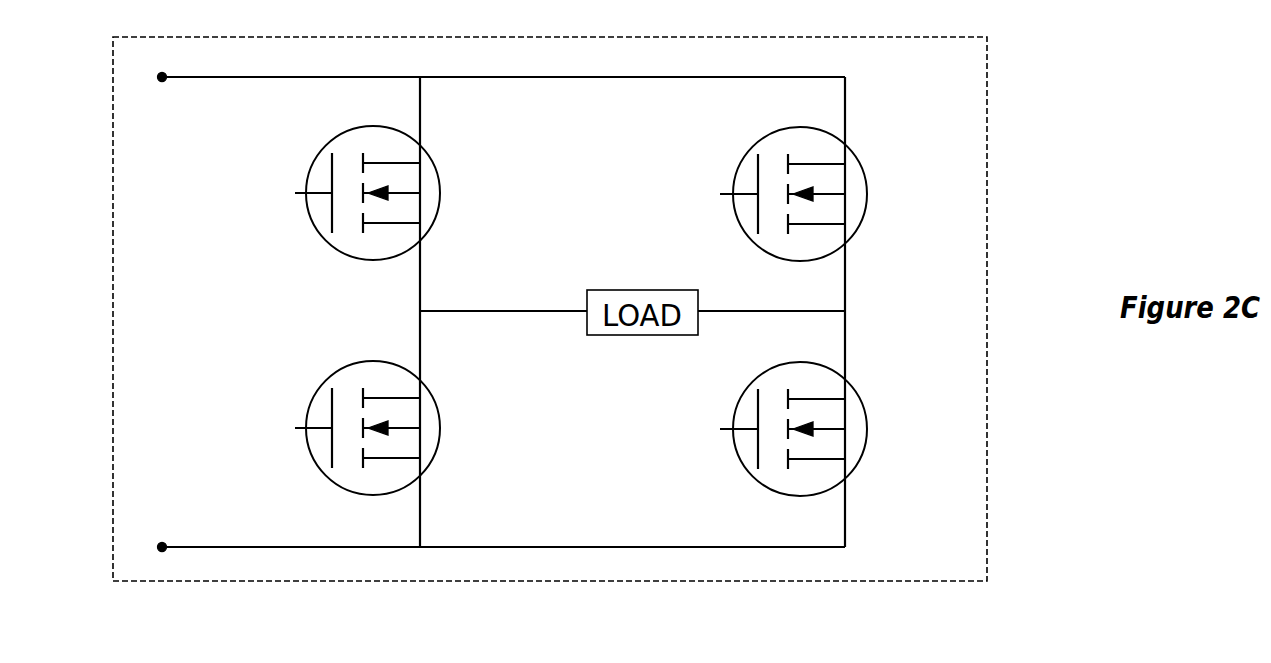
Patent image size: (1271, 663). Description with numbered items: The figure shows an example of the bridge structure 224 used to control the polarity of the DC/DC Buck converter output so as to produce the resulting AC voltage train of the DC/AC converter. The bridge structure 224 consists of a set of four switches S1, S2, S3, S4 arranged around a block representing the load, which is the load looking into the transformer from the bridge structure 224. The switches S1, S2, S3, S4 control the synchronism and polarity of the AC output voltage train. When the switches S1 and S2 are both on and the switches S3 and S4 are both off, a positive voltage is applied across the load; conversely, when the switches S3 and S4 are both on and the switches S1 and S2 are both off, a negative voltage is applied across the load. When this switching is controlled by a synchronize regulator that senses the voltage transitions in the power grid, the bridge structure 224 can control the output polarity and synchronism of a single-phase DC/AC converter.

The bridge structure 224 is at (593, 74).
The switch S1 is at (324, 149).
The switch S2 is at (750, 387).
The switch S3 is at (749, 151).
The switch S4 is at (325, 383).